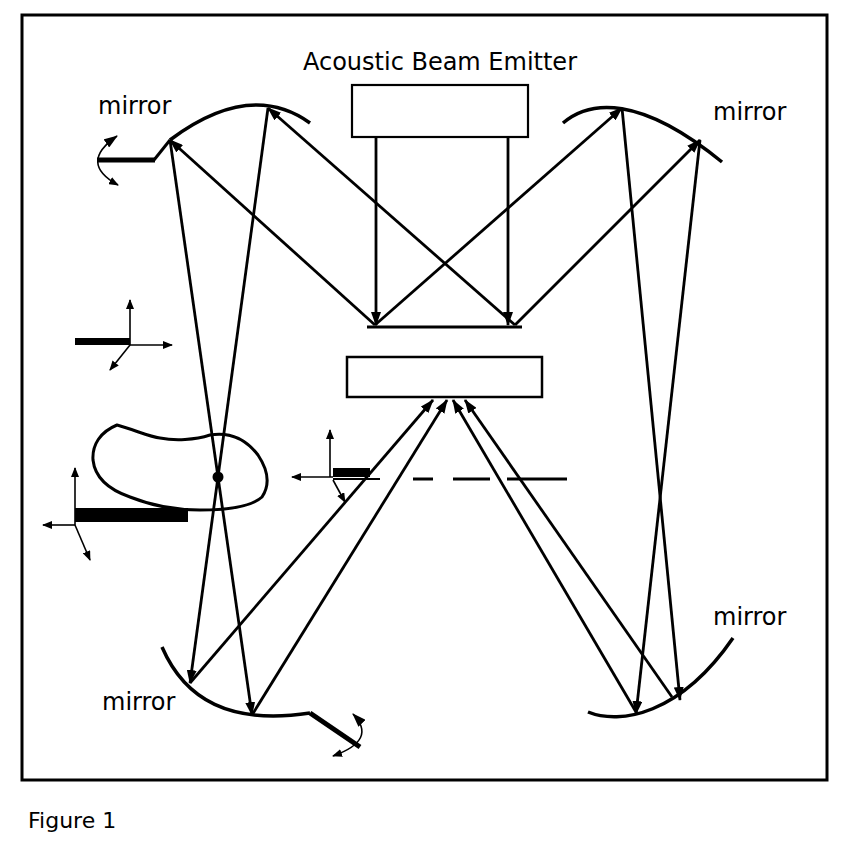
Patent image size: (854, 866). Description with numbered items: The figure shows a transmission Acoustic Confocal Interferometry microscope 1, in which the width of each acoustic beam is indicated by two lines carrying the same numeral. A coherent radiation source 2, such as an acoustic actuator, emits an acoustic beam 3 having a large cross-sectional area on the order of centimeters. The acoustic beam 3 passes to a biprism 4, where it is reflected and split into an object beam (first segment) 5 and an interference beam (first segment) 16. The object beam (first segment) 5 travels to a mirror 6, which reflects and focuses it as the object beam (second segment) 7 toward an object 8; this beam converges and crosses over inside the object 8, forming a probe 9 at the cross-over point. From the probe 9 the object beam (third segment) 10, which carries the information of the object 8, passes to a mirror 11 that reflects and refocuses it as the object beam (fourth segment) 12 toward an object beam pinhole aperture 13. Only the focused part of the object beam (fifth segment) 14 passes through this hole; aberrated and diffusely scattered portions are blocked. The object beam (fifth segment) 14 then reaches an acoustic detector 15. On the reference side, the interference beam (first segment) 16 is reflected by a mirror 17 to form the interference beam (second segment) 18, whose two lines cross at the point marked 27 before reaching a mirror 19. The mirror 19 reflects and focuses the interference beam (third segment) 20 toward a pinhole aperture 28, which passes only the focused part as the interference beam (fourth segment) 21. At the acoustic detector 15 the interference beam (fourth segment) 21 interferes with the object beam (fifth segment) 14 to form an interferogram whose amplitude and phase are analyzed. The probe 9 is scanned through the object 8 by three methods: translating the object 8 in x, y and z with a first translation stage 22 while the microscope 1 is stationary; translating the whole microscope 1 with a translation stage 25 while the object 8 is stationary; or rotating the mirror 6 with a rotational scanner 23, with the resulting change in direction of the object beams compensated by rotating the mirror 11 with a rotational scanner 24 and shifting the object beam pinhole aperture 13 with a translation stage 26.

The transmission Acoustic Confocal Interferometry microscope 1 is at (98, 59).
The coherent radiation source 2 is at (440, 111).
The acoustic beam 3 is at (442, 231).
The biprism 4 is at (444, 311).
The object beam (first segment) 5 is at (342, 216).
The mirror 6 is at (240, 108).
The object beam (second segment) 7 is at (214, 292).
The object 8 is at (180, 467).
The probe 9 is at (227, 478).
The object beam (third segment) 10 is at (220, 596).
The mirror 11 is at (236, 700).
The object beam (fourth segment) 12 is at (318, 557).
The object beam pinhole aperture 13 is at (412, 500).
The object beam (fifth segment) 14 is at (405, 447).
The acoustic detector 15 is at (444, 377).
The interference beam (first segment) 16 is at (537, 216).
The mirror 17 is at (642, 121).
The interference beam (second segment) 18 is at (663, 411).
The mirror 19 is at (660, 688).
The interference beam (third segment) 20 is at (562, 556).
The interference beam (fourth segment) 21 is at (486, 449).
The first translation stage 22 is at (115, 521).
The rotational scanner 23 is at (106, 160).
The rotational scanner 24 is at (327, 738).
The translation stage 2 25 is at (130, 341).
The translation stage 3 26 is at (329, 473).
The beam crossing point 27 is at (692, 483).
The pinhole aperture 28 is at (510, 500).